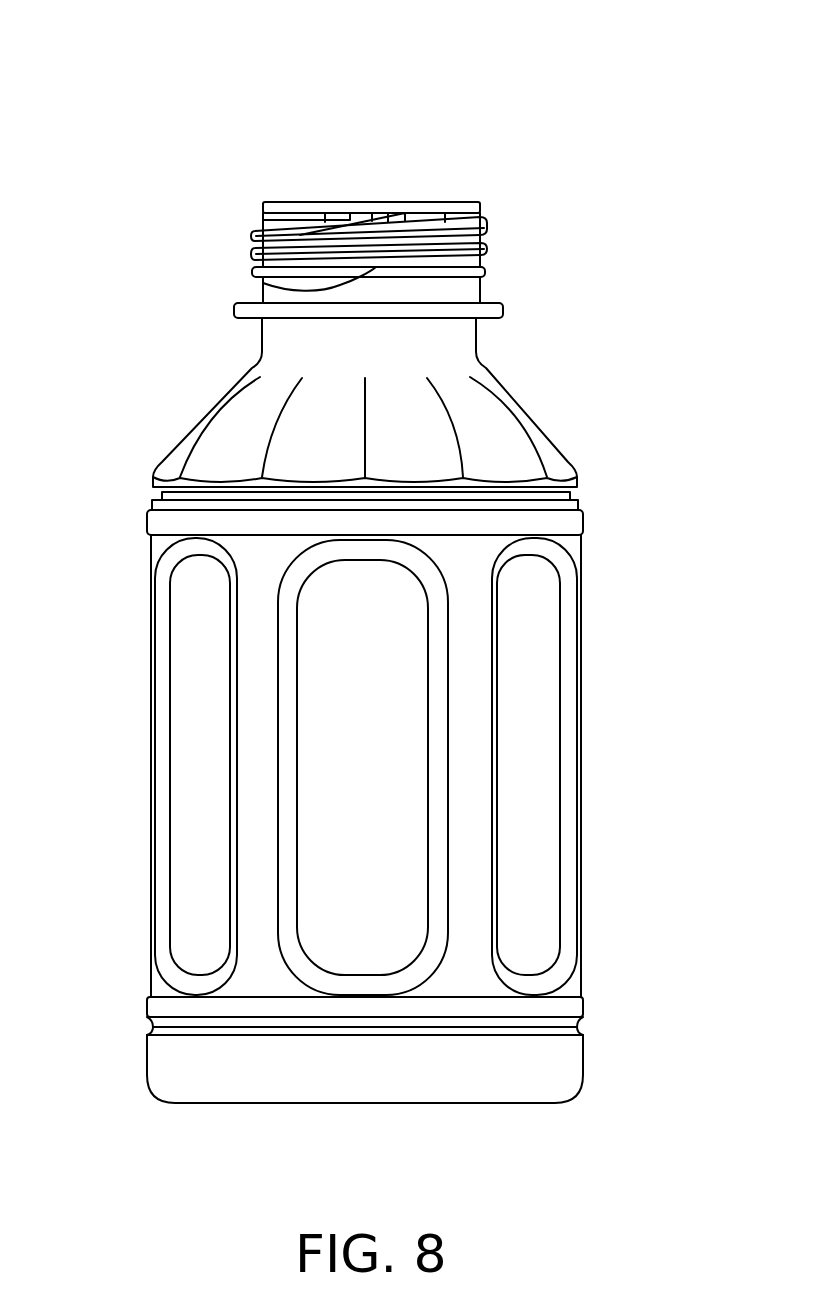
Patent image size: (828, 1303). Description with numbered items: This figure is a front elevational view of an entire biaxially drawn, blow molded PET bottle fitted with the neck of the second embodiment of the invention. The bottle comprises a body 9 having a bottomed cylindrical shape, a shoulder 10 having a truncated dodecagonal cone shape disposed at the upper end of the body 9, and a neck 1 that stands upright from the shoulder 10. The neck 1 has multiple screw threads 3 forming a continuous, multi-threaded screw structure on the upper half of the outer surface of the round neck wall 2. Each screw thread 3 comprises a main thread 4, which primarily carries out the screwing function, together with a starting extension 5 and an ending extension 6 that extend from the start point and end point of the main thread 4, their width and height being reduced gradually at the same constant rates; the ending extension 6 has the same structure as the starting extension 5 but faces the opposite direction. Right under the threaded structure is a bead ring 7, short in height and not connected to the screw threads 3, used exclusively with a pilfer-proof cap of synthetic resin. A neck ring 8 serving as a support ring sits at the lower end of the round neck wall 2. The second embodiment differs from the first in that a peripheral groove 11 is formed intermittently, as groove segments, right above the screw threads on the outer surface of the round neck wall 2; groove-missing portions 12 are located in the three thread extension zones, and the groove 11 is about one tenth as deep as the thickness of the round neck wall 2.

The neck 1 is at (473, 195).
The round neck wall 2 is at (263, 223).
The screw thread 3 is at (246, 237).
The main thread 4 is at (300, 232).
The starting extension 5 is at (372, 213).
The ending extension 6 is at (264, 284).
The bead ring 7 is at (445, 270).
The neck ring 8 is at (240, 313).
The body 9 is at (470, 755).
The shoulder 10 is at (543, 435).
The groove 11 is at (325, 213).
The groove-missing portion 12 is at (388, 213).